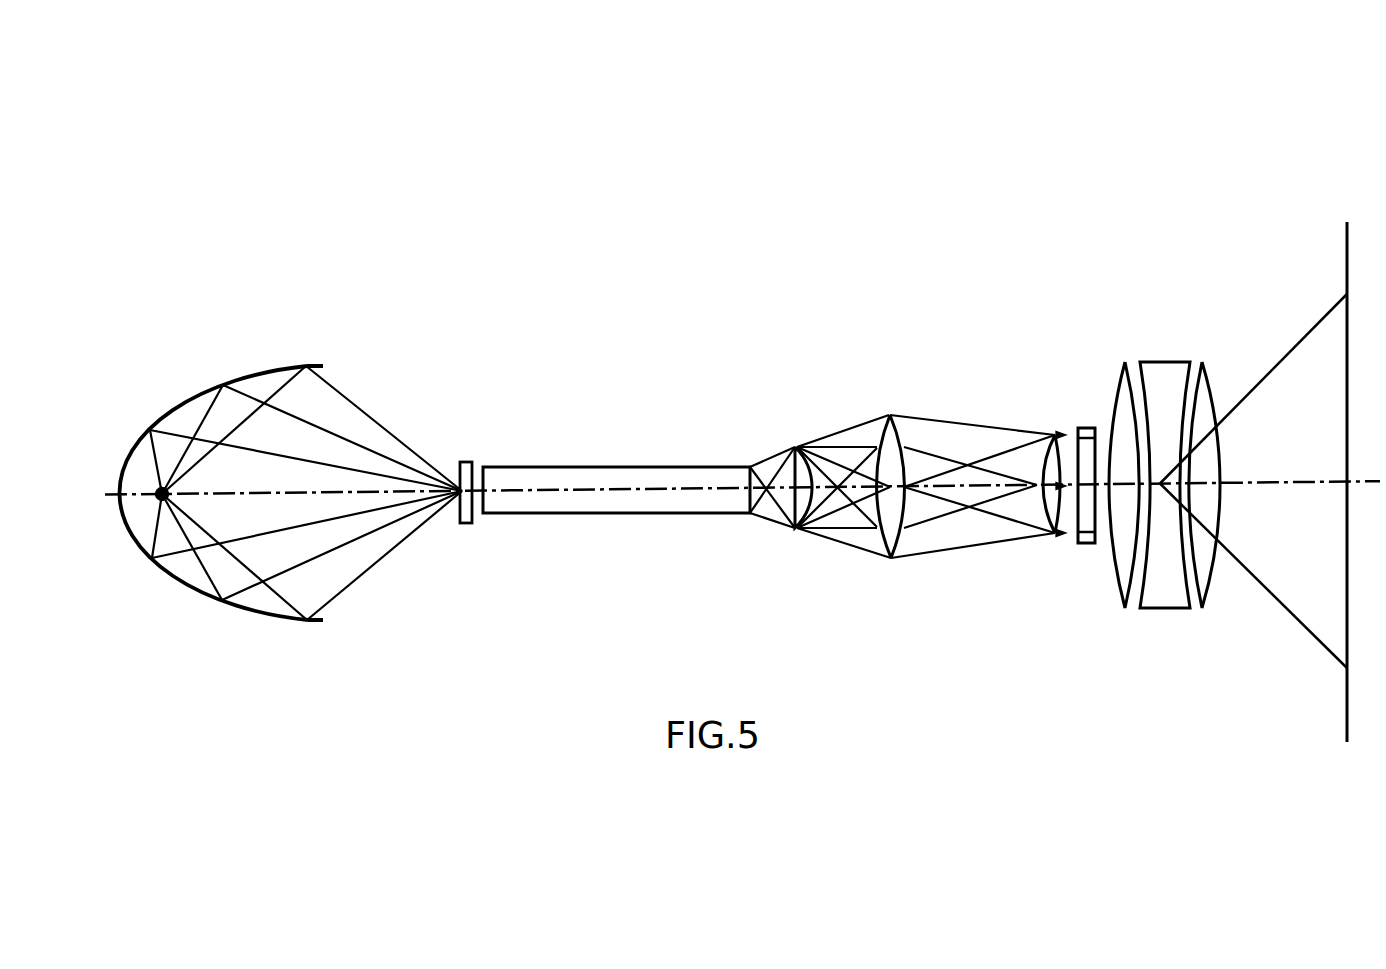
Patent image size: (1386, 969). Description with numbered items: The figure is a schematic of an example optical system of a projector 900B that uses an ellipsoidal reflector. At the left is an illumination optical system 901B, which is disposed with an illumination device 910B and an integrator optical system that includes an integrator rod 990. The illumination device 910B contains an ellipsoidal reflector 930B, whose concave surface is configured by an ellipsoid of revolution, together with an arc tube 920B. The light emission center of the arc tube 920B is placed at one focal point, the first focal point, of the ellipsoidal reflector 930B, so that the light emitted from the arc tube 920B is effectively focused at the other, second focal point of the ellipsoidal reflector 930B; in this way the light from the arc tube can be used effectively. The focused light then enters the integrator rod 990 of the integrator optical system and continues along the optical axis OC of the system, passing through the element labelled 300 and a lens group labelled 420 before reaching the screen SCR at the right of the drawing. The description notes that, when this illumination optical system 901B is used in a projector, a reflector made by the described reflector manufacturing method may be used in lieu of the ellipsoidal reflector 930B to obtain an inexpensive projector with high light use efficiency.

The projector 900B is at (1174, 185).
The illumination optical system 901B is at (1005, 247).
The illumination device 910B is at (256, 365).
The arc tube 920B is at (145, 514).
The ellipsoidal reflector 930B is at (272, 619).
The integrator rod 990 is at (601, 448).
The liquid crystal light valve 300 is at (1086, 428).
The projection lens 420 is at (1212, 362).
The screen SCR is at (1343, 265).
The optical axis OC is at (1272, 483).